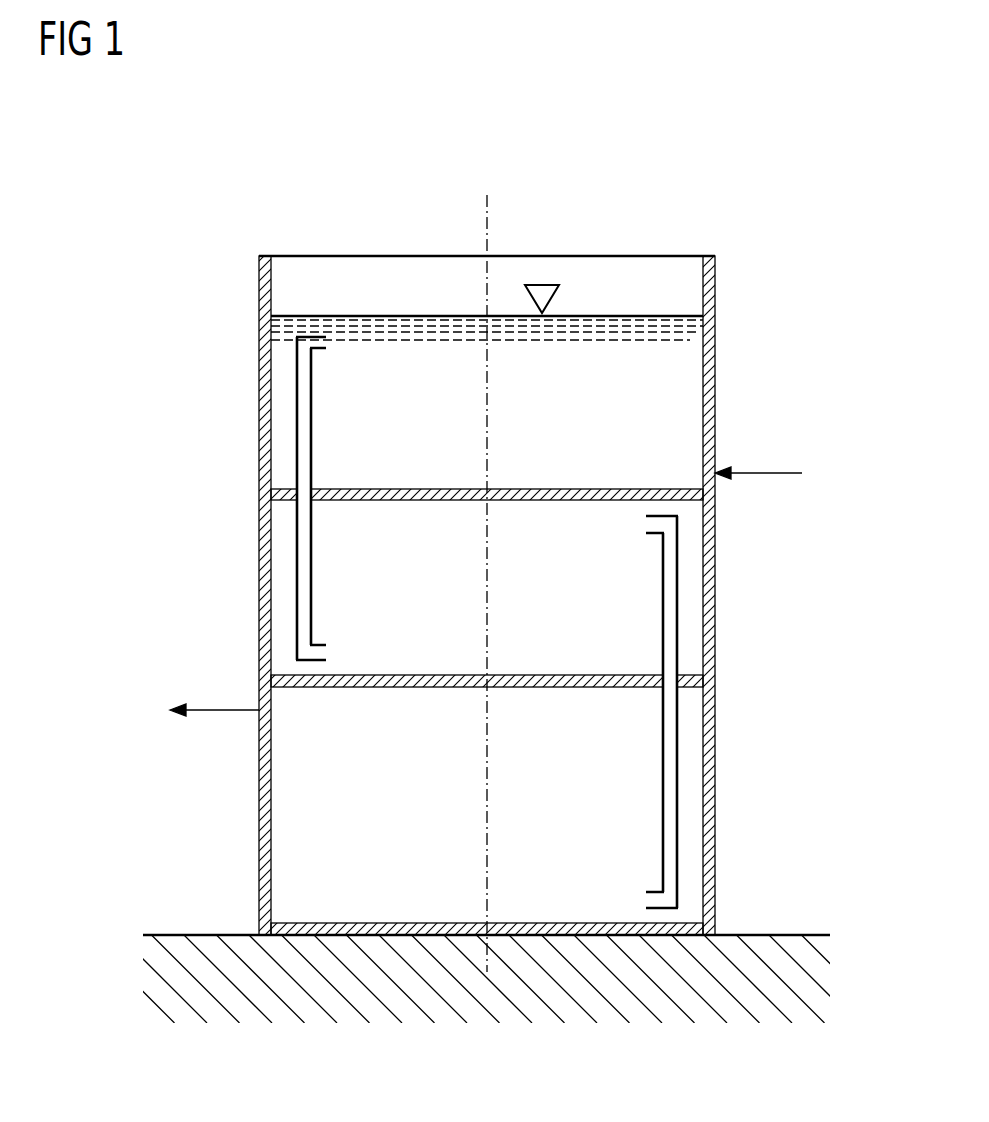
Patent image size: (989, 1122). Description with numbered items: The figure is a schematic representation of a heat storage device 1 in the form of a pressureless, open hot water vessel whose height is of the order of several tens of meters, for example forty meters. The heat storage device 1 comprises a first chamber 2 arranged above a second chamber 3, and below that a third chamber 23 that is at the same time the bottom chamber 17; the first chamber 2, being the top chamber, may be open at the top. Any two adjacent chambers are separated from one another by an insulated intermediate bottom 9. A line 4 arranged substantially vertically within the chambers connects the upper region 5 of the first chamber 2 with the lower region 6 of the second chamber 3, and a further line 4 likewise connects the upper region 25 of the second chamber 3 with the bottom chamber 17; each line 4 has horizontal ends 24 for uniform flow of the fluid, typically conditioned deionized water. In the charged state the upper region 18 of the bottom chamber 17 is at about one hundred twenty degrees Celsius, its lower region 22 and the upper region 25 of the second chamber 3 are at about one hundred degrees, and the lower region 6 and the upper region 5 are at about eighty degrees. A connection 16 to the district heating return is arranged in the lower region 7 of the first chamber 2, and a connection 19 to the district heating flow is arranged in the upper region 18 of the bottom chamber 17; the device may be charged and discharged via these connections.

The heat storage device 1 is at (247, 118).
The first chamber 2 is at (685, 373).
The second chamber 3 is at (683, 530).
The line 4 is at (302, 565).
The upper region of the first chamber 5 is at (275, 333).
The lower region of the second chamber 6 is at (285, 653).
The lower region of the first chamber 7 is at (285, 463).
The insulated intermediate bottom 9 is at (442, 500).
The connection to the district heating return 16 is at (762, 473).
The bottom chamber 17 is at (420, 909).
The upper region of the bottom chamber 18 is at (645, 710).
The connection to the district heating flow 19 is at (215, 710).
The lower region of the bottom chamber 22 is at (690, 898).
The third chamber 23 is at (285, 898).
The horizontal ends 24 is at (326, 349).
The upper region of the second chamber 25 is at (330, 528).